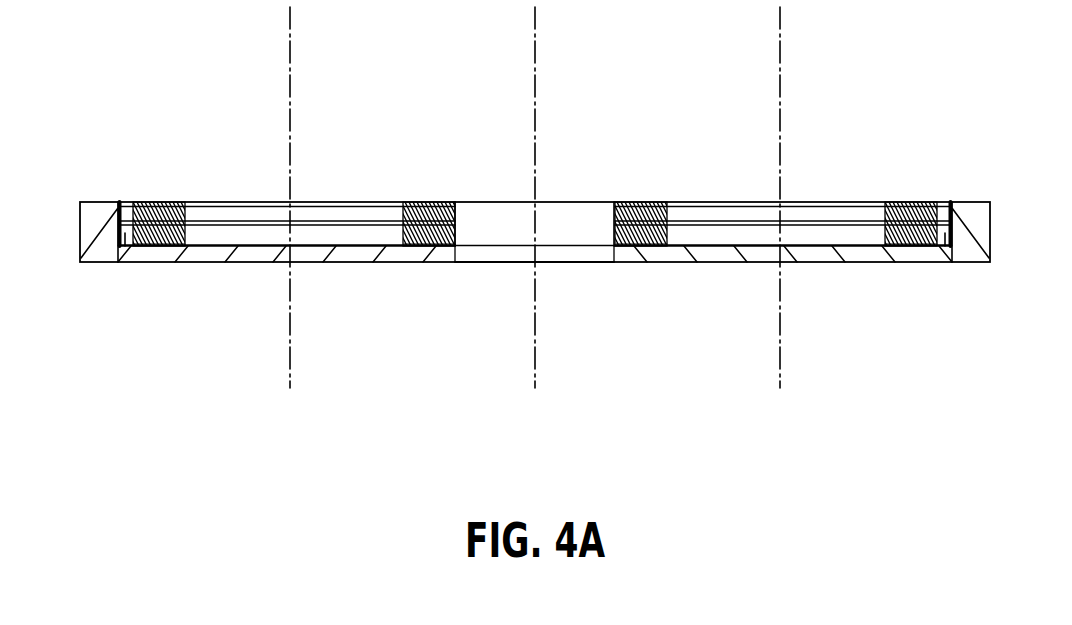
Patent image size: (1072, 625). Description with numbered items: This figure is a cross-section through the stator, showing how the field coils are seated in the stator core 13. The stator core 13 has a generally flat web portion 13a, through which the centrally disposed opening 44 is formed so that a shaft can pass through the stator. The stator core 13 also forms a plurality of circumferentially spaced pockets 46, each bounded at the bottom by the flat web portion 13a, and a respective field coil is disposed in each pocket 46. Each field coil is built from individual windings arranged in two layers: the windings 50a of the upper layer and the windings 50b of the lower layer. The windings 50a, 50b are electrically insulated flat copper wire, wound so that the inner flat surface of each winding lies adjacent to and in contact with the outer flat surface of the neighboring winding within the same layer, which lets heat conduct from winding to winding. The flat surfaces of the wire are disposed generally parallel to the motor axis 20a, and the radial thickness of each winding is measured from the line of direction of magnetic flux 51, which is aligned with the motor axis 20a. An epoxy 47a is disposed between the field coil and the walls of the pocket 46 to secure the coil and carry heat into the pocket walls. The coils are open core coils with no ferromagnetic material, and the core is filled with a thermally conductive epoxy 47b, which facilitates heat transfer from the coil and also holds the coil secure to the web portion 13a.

The stator core 13 is at (80, 232).
The web portion 13a is at (92, 213).
The motor axis 20a is at (535, 62).
The opening 44 is at (510, 262).
The pocket 46 is at (123, 200).
The epoxy 47a is at (125, 243).
The thermally conductive epoxy 47b is at (243, 213).
The winding of upper layer 50a is at (167, 200).
The winding of lower layer 50b is at (155, 225).
The direction of magnetic flux 51 is at (290, 62).